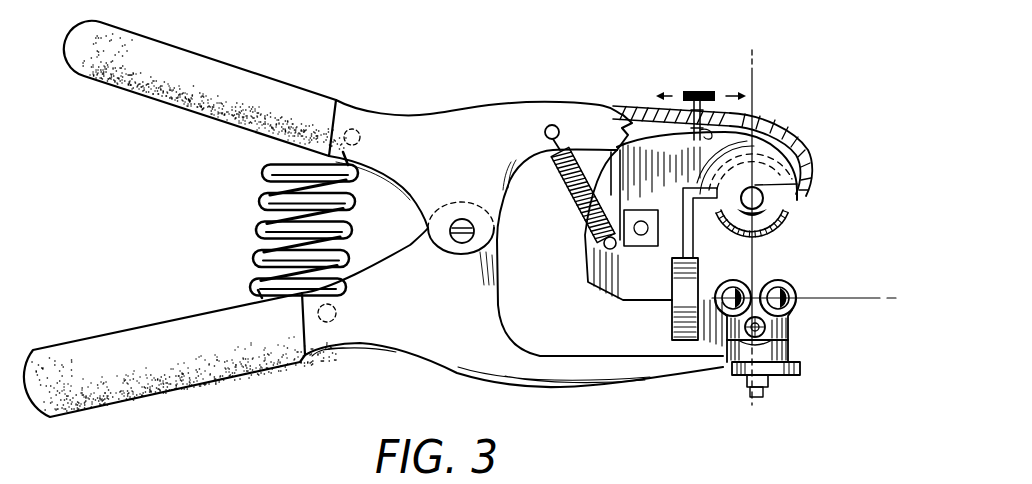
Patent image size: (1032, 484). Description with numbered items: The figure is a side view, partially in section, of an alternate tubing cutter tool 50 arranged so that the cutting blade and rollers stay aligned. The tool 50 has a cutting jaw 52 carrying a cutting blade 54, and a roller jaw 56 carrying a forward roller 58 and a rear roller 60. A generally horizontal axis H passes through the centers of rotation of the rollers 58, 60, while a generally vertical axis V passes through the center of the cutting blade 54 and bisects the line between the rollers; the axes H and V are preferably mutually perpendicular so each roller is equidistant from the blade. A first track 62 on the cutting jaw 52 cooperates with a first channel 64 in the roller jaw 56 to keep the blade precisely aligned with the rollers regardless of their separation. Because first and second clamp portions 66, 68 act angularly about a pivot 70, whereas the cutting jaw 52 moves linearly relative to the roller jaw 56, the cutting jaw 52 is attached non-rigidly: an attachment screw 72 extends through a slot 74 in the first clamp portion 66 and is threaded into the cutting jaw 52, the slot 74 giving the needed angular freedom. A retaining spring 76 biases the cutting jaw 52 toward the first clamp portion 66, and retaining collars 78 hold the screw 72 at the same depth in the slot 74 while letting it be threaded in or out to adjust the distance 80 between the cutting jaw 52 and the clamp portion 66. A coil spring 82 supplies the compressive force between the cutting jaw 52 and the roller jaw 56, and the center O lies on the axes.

The tool 50 is at (457, 70).
The cutting jaw 52 is at (630, 192).
The cutting blade 54 is at (793, 226).
The roller jaw 56 is at (793, 343).
The forward roller 58 is at (797, 297).
The rear roller 60 is at (738, 284).
The first track 62 is at (713, 288).
The first channel 64 is at (670, 290).
The first clamp portion 66 is at (467, 168).
The second clamp portion 68 is at (450, 322).
The pivot 70 is at (500, 264).
The attachment screw 72 is at (697, 90).
The slot 74 is at (657, 108).
The retaining spring 76 is at (573, 213).
The retaining collars 78 is at (748, 117).
The distance 80 is at (787, 130).
The coil spring 82 is at (253, 228).
The vertical axis V is at (798, 190).
The horizontal axis H is at (862, 298).
The center point O is at (787, 243).